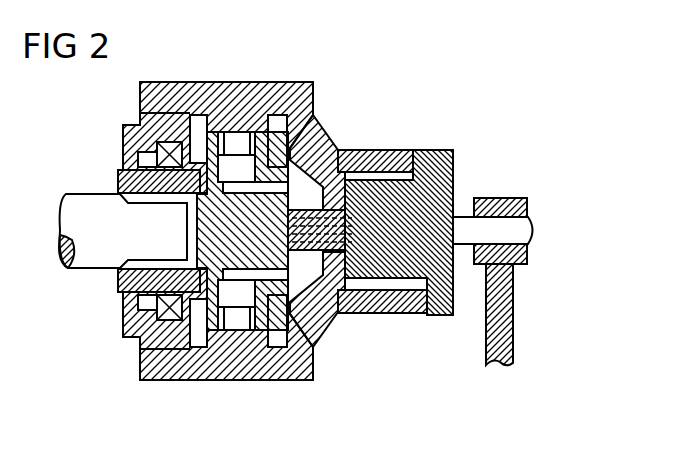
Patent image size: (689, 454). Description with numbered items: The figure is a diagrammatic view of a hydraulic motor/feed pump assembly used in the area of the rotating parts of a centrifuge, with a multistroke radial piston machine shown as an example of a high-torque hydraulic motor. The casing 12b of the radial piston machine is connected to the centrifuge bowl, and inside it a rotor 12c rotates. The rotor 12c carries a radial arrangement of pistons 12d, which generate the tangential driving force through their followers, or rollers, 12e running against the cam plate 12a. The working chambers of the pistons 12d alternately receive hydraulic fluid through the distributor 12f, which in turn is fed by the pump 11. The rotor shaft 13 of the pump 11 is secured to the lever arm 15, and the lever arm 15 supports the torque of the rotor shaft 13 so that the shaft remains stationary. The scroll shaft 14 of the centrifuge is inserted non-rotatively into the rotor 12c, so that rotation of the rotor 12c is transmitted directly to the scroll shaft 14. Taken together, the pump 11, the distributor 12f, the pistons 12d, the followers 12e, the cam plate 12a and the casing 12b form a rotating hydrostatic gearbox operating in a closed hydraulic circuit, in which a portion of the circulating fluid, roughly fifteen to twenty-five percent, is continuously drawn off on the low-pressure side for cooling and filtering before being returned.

The pump 11 is at (437, 150).
The cam plate 12a is at (117, 278).
The casing 12b is at (140, 113).
The rotor 12c is at (300, 348).
The pistons 12d is at (236, 300).
The followers 12e is at (243, 137).
The distributor 12f is at (338, 150).
The rotor shaft 13 is at (528, 231).
The scroll shaft 14 is at (91, 205).
The lever arm 15 is at (510, 324).